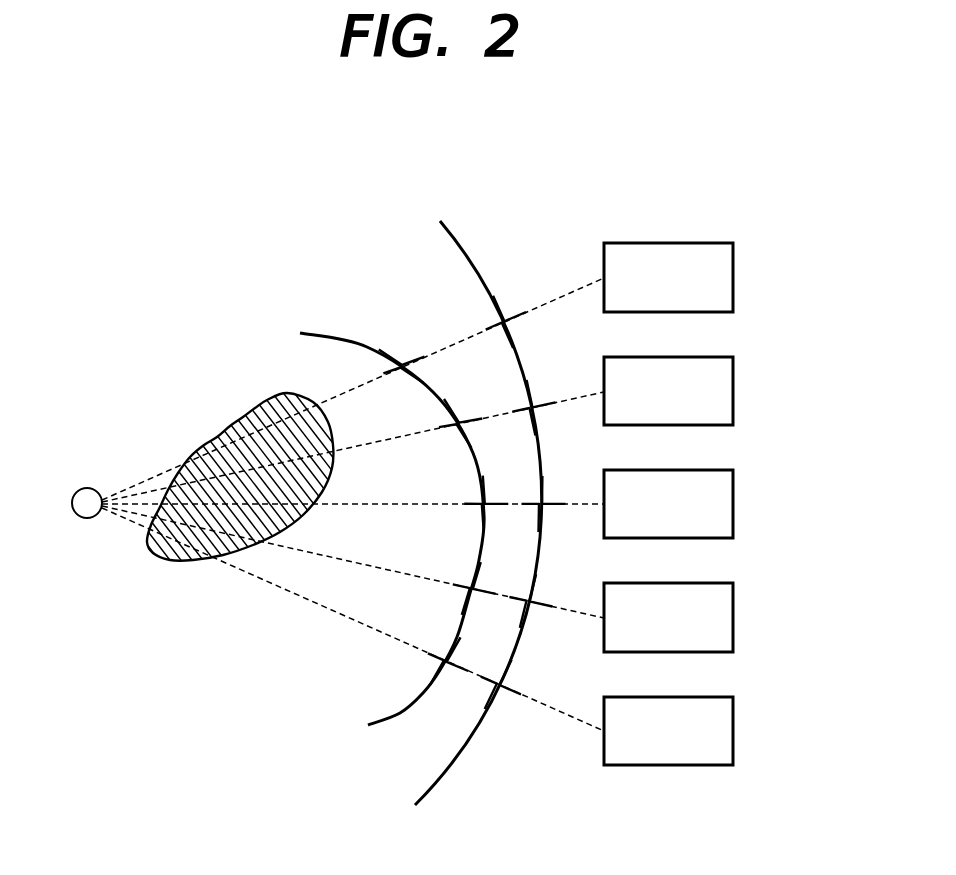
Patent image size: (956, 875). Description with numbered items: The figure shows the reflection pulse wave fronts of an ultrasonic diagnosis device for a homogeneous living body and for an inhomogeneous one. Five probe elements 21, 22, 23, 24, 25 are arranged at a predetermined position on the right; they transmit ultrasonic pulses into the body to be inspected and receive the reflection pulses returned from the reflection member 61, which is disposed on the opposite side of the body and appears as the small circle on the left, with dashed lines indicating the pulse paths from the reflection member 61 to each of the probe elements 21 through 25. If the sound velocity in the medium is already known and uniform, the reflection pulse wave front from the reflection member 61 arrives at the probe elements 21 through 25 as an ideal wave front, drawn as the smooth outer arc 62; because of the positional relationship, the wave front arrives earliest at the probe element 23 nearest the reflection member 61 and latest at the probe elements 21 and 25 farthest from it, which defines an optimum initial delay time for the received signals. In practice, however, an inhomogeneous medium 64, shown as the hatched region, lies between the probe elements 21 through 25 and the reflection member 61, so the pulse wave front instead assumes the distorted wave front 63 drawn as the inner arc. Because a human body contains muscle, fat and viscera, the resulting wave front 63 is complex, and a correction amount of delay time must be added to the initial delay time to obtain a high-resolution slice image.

The probe element 21 is at (733, 288).
The probe element 22 is at (733, 393).
The probe element 23 is at (733, 514).
The probe element 24 is at (733, 628).
The probe element 25 is at (733, 741).
The reflection member 61 is at (87, 525).
The outer detector arc 62 is at (460, 233).
The distorted wave front 63 is at (320, 332).
The inhomogeneous medium 64 is at (190, 563).